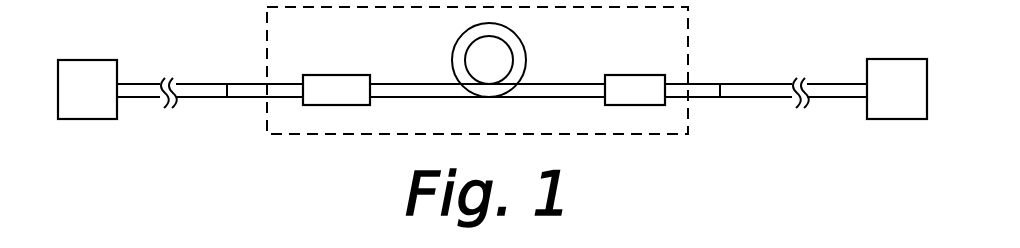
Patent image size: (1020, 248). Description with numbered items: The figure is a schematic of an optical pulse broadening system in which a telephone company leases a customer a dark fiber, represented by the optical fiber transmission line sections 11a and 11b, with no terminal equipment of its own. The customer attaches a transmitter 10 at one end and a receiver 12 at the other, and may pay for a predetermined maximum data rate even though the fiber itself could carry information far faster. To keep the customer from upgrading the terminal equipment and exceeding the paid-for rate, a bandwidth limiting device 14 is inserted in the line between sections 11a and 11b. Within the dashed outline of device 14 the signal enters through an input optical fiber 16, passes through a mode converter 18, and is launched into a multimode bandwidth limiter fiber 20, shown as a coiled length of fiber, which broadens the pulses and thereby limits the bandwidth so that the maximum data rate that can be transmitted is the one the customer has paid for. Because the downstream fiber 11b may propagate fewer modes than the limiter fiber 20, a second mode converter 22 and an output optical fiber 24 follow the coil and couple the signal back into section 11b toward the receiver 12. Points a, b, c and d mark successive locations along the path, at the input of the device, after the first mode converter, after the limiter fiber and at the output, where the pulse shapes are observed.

The transmitter 10 is at (83, 60).
The receiver 12 is at (895, 59).
The optical fiber transmission line section 11a is at (191, 84).
The optical fiber transmission line section 11b is at (812, 84).
The bandwidth limiting device 14 is at (653, 134).
The input optical fiber 16 is at (243, 97).
The mode converter 18 is at (328, 75).
The multimode bandwidth limiter fiber 20 is at (549, 83).
The second mode converter 22 is at (630, 75).
The output optical fiber 24 is at (700, 83).
The point a is at (283, 82).
The point b is at (380, 82).
The point c is at (591, 82).
The point d is at (706, 98).